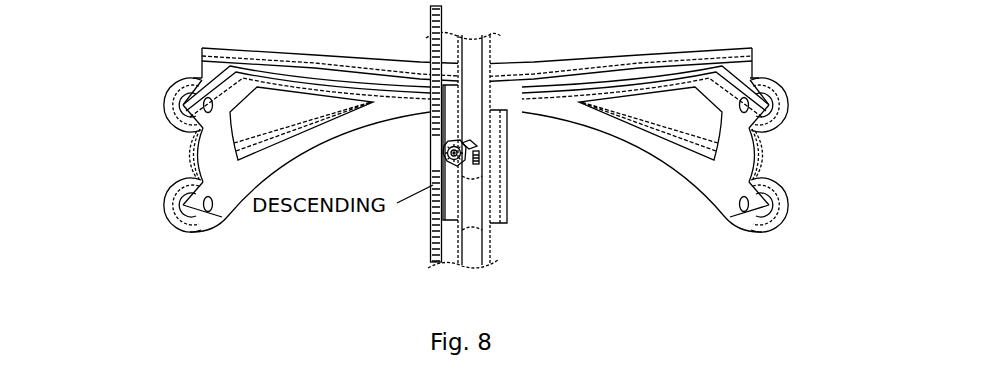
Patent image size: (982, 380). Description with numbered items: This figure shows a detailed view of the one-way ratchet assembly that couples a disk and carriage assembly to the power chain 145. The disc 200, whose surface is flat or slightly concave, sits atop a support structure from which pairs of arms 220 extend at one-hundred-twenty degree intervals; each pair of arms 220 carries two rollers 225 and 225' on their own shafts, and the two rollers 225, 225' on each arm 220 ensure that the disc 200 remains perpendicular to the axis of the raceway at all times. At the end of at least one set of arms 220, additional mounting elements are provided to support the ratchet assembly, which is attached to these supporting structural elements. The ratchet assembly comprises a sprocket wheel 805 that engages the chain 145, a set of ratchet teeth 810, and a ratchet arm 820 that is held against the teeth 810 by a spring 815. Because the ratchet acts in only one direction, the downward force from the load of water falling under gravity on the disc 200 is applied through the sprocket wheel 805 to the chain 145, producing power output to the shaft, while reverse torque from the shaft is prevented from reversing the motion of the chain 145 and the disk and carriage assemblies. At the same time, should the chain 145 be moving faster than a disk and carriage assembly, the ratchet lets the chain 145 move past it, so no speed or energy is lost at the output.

The disc 200 is at (578, 61).
The arms 220 is at (322, 146).
The roller 225 is at (472, 113).
The roller 225' is at (475, 242).
The chain 145 is at (432, 170).
The sprocket wheel 805 is at (452, 141).
The ratchet teeth 810 is at (452, 160).
The spring 815 is at (478, 160).
The ratchet arm 820 is at (465, 145).